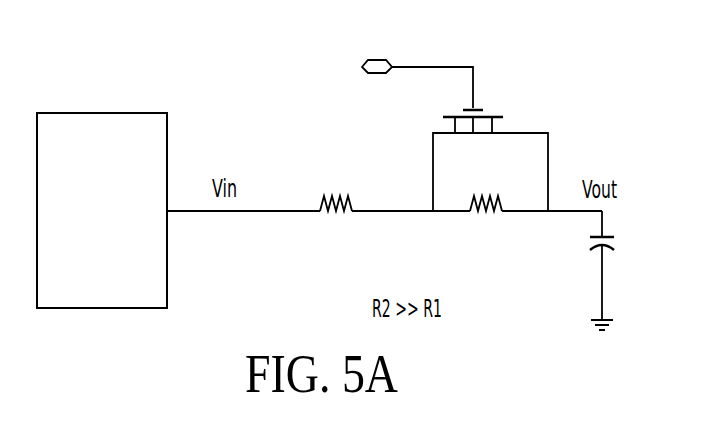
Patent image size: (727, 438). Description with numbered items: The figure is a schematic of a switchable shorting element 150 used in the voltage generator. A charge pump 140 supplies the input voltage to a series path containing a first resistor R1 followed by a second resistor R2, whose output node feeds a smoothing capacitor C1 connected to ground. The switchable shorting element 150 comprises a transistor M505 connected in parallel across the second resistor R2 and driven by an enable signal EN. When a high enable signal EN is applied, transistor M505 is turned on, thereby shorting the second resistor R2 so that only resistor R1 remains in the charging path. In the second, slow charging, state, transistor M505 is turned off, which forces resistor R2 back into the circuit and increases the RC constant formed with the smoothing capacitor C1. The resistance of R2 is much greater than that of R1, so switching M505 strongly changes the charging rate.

The charge pump 140 is at (117, 113).
The switchable shorting element 150 is at (446, 105).
The transistor M505 is at (494, 115).
The resistor R1 is at (336, 222).
The second resistor R2 is at (486, 222).
The smoothing capacitor C1 is at (587, 270).